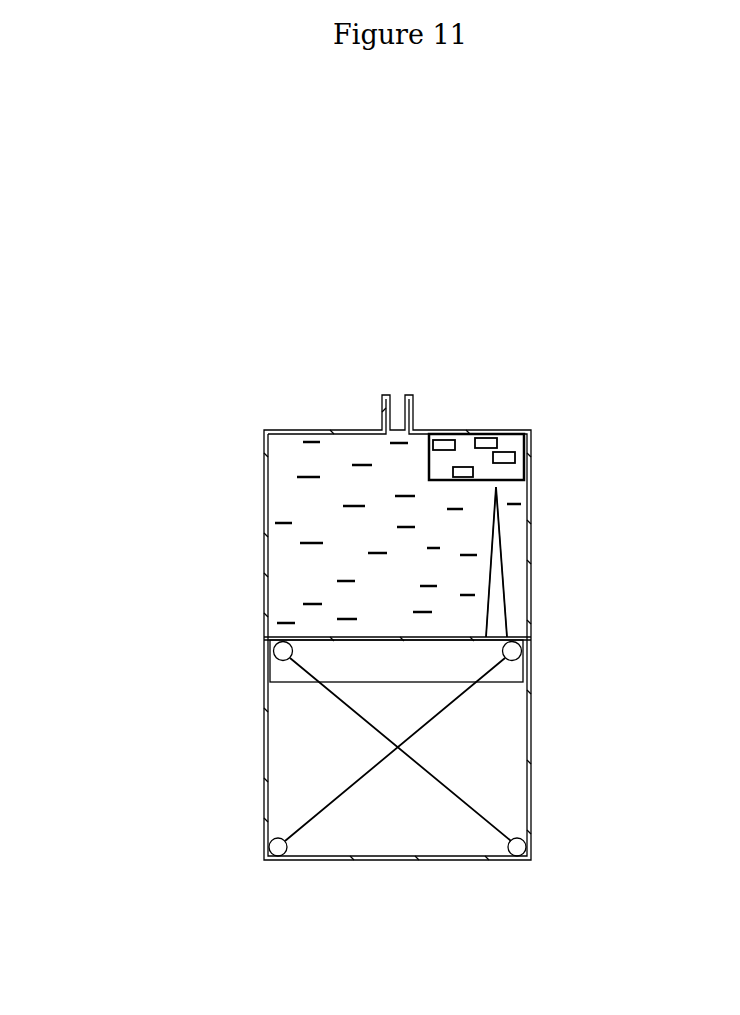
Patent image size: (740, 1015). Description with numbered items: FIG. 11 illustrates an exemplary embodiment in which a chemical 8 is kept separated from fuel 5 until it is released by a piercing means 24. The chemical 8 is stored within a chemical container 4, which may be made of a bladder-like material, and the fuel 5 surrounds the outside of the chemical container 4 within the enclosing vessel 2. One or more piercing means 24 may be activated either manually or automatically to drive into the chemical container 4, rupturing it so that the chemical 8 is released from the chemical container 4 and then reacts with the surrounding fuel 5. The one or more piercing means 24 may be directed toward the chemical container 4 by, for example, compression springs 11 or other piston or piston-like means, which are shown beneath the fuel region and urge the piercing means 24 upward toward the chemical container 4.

The container 2 is at (264, 567).
The fuel 5 is at (302, 487).
The chemical 8 is at (505, 464).
The chemical container 4 is at (509, 485).
The piercing means 24 is at (508, 584).
The compression springs 11 is at (360, 766).